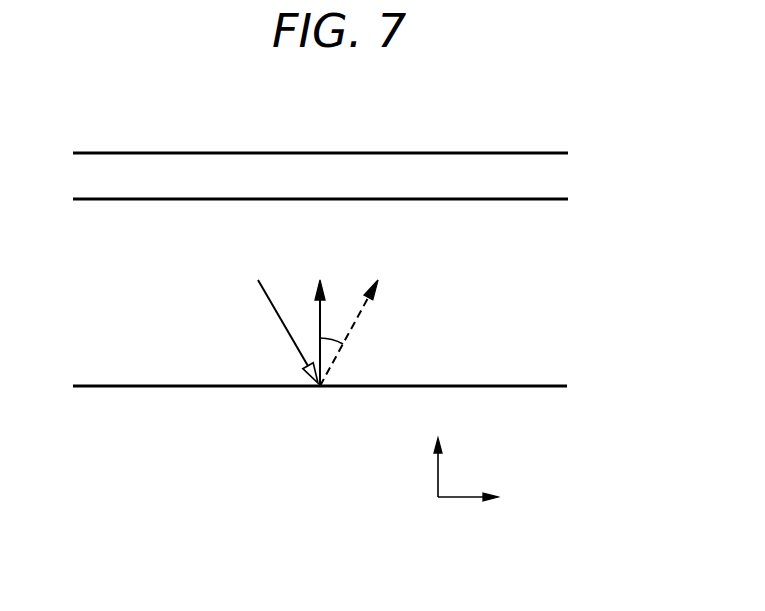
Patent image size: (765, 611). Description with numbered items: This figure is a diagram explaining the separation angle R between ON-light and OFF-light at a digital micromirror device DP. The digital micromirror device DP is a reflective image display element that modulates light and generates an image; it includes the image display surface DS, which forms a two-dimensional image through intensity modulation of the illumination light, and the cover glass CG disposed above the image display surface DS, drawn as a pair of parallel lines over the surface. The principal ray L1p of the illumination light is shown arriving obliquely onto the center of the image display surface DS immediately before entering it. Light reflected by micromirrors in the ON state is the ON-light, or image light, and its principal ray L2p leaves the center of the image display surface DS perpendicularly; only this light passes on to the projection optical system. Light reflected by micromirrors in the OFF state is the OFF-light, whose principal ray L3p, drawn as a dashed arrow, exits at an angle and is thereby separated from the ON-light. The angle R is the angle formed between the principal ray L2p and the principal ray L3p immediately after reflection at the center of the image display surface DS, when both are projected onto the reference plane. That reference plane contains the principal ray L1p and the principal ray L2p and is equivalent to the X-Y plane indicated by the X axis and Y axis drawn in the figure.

The cover glass CG is at (580, 153).
The image display surface DS is at (345, 385).
The digital micromirror device DP is at (340, 446).
The principal ray of the illumination light L1p is at (265, 314).
The principal ray of the ON-light L2p is at (322, 316).
The principal ray of the OFF-light L3p is at (375, 316).
The ON-state ON is at (318, 228).
The OFF-state OFF is at (404, 228).
The separation angle R is at (335, 320).
The X axis X is at (479, 497).
The Y axis Y is at (437, 451).